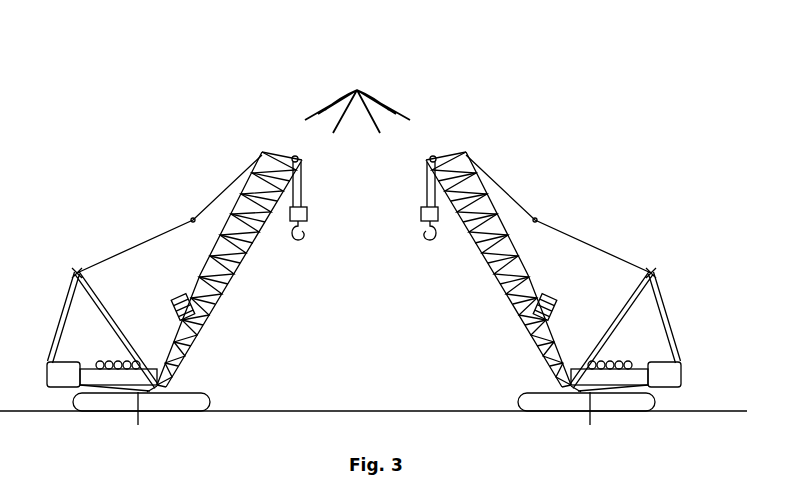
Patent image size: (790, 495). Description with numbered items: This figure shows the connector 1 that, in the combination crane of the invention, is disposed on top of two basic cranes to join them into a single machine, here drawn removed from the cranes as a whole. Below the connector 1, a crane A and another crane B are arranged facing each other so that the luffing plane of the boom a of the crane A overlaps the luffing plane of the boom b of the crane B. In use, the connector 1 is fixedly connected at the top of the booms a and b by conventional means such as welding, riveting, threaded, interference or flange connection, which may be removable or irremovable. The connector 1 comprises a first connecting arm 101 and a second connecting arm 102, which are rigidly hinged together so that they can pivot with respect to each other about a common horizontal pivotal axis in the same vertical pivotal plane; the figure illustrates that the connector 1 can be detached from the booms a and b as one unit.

The connector 1 is at (364, 62).
The first connecting arm 101 is at (343, 117).
The second connecting arm 102 is at (381, 111).
The crane A is at (165, 260).
The crane B is at (542, 245).
The boom a is at (235, 285).
The boom b is at (492, 274).